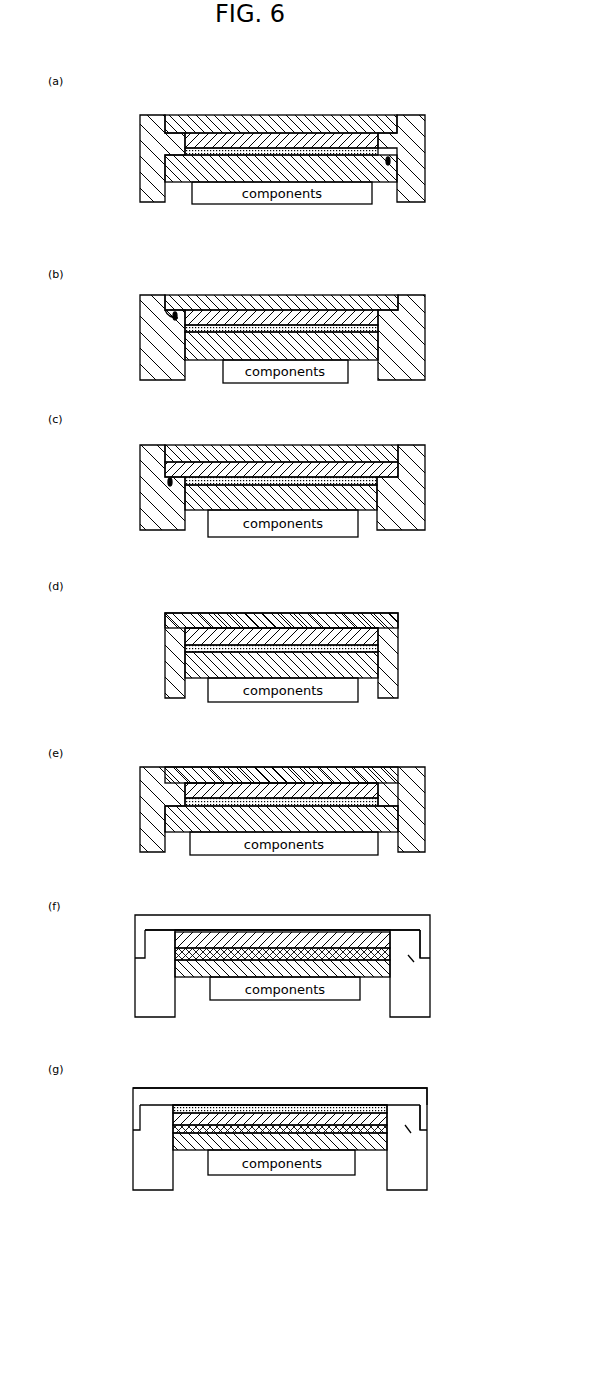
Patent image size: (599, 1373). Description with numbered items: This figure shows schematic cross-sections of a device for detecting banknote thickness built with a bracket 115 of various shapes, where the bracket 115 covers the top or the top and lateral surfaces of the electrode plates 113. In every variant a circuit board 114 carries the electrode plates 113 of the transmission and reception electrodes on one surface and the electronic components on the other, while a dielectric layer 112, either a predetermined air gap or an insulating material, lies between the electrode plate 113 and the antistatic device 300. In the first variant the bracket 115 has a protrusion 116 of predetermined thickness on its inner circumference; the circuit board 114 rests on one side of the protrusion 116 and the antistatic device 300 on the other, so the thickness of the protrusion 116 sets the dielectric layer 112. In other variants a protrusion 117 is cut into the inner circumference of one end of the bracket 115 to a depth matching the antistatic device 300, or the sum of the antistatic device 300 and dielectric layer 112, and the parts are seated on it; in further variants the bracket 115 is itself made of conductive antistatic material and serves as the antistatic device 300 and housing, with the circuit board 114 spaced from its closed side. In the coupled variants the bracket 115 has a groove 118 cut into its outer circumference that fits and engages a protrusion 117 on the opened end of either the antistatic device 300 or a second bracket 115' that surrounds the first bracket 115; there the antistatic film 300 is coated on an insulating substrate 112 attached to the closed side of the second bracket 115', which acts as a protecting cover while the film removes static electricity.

The dielectric layer 112 is at (308, 124).
The electrode plate 113 is at (237, 150).
The circuit board 114 is at (190, 168).
The bracket 115 is at (310, 640).
The second bracket 115' is at (292, 1084).
The protrusion 116 is at (388, 166).
The protrusion 117 is at (172, 320).
The groove 118 is at (414, 965).
The antistatic device 300 is at (337, 118).